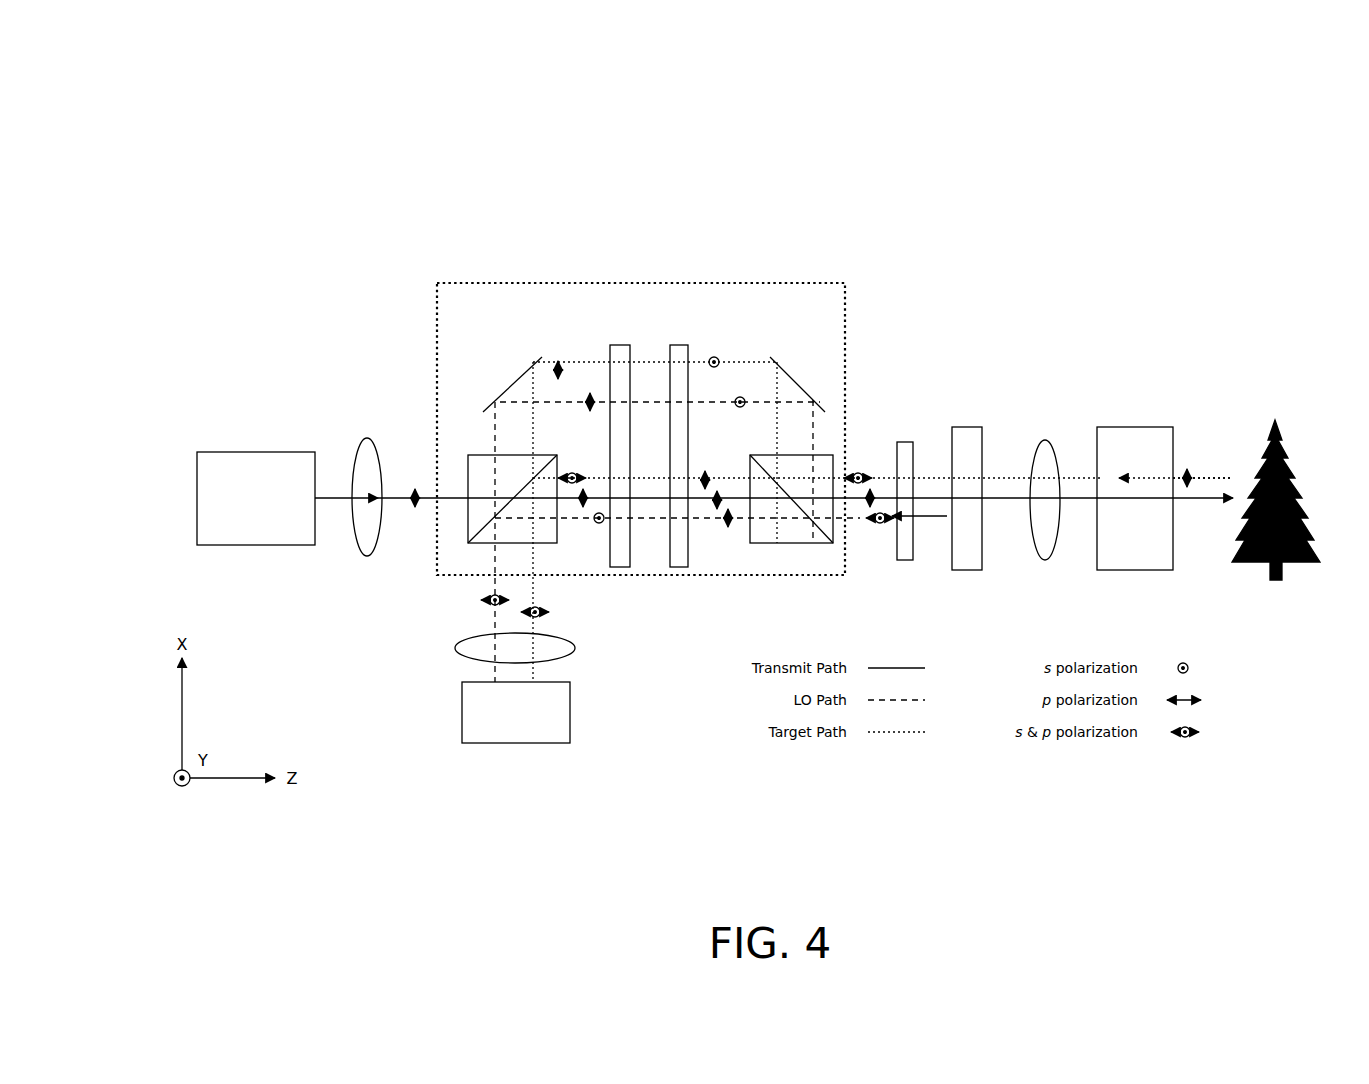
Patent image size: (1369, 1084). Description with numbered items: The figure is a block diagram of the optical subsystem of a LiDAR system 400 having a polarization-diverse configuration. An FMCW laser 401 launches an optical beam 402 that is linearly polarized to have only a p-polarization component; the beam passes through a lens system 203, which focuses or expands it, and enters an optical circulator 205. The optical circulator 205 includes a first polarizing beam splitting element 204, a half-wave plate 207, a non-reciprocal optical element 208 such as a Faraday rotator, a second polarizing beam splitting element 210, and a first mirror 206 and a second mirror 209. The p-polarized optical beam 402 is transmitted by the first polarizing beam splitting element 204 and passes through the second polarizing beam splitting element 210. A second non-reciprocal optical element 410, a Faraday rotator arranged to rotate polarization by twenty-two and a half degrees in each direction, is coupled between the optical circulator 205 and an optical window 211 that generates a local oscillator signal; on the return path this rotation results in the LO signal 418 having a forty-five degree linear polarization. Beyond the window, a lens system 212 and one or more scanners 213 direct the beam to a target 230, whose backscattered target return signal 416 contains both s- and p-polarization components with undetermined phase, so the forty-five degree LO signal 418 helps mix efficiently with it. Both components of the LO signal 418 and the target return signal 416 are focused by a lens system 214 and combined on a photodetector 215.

The LiDAR system 400 is at (133, 95).
The FMCW laser 401 is at (196, 458).
The optical beam 402 is at (337, 499).
The lens system 203 is at (350, 480).
The first polarizing beam splitting element 204 is at (468, 455).
The optical circulator 205 is at (618, 278).
The first mirror 206 is at (510, 383).
The half-wave plate 207 is at (607, 345).
The non-reciprocal optical element 208 is at (688, 345).
The second mirror 209 is at (800, 388).
The second polarizing beam splitting element 210 is at (833, 455).
The second non-reciprocal optical element 410 is at (913, 440).
The optical window 211 is at (978, 430).
The lens system 212 is at (1045, 440).
The scanners 213 is at (1172, 440).
The target 230 is at (1287, 452).
The target return signal 416 is at (1137, 480).
The LO signal 418 is at (918, 517).
The lens system 214 is at (472, 637).
The photodetector 215 is at (462, 700).